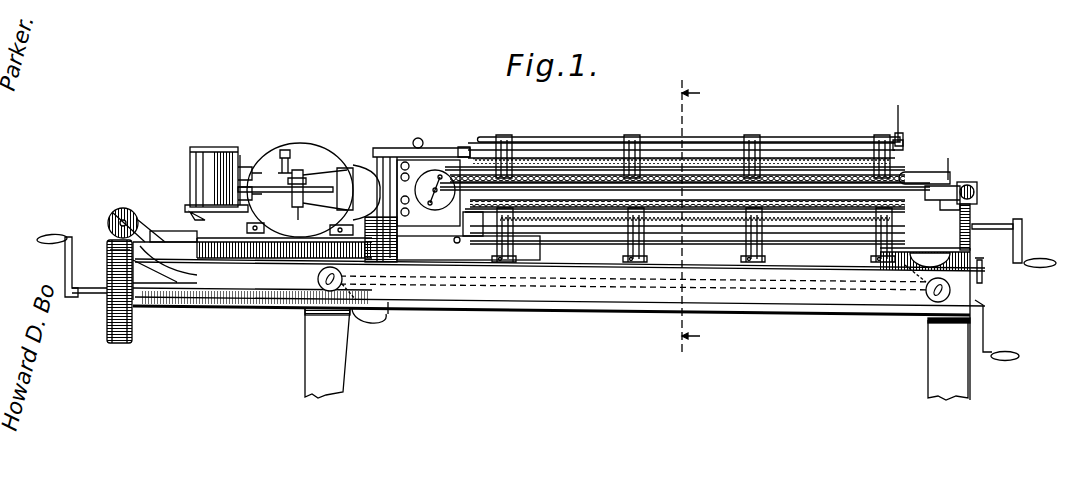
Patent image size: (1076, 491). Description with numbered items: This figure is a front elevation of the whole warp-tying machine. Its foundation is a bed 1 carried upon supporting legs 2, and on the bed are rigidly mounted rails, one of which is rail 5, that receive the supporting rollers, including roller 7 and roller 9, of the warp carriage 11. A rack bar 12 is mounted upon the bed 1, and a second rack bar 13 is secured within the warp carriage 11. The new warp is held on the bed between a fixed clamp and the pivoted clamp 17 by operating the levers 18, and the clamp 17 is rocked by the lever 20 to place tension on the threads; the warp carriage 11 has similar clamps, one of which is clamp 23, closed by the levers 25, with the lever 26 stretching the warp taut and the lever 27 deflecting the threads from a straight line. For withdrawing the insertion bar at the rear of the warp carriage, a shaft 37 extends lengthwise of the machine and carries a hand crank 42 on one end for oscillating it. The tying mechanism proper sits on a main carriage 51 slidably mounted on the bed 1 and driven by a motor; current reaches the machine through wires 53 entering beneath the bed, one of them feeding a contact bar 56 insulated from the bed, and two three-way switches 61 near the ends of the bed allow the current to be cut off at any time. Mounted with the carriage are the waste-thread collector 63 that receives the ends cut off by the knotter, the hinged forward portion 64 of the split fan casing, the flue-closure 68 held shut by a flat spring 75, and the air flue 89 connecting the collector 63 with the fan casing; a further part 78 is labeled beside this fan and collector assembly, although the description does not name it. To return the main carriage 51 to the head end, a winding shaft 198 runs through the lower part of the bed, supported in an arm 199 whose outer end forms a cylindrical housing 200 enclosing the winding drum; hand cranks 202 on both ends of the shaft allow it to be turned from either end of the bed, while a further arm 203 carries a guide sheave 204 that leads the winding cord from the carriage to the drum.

The bed 1 is at (640, 300).
The supporting legs 2 is at (347, 366).
The rail 5 is at (997, 188).
The supporting roller 7 is at (423, 143).
The supporting roller 9 is at (969, 182).
The warp carriage 11 is at (784, 144).
The rack bar 12 is at (818, 226).
The rack bar 13 is at (822, 150).
The pivoted clamp 17 is at (598, 208).
The levers 18 is at (903, 230).
The lever 20 is at (984, 283).
The warp clamp 23 is at (718, 182).
The levers 25 is at (918, 176).
The lever 26 is at (901, 112).
The lever 27 is at (951, 160).
The shaft 37 is at (996, 224).
The hand crank 42 is at (1036, 258).
The main carriage 51 is at (448, 243).
The wires 53 is at (386, 314).
The contact bar 56 is at (848, 242).
The three-way switches 61 is at (322, 289).
The centrifugal waste-thread collector 63 is at (190, 160).
The forward portion of fan casing 64 is at (330, 163).
The flue-closure 68 is at (350, 172).
The flat spring 75 is at (320, 178).
The arm 78 is at (298, 170).
The air flue 89 is at (242, 153).
The winding shaft 198 is at (80, 297).
The arm 199 is at (183, 282).
The cylindrical housing 200 is at (129, 340).
The hand cranks 202 is at (58, 236).
The arm 203 is at (142, 216).
The guide sheave 204 is at (118, 210).